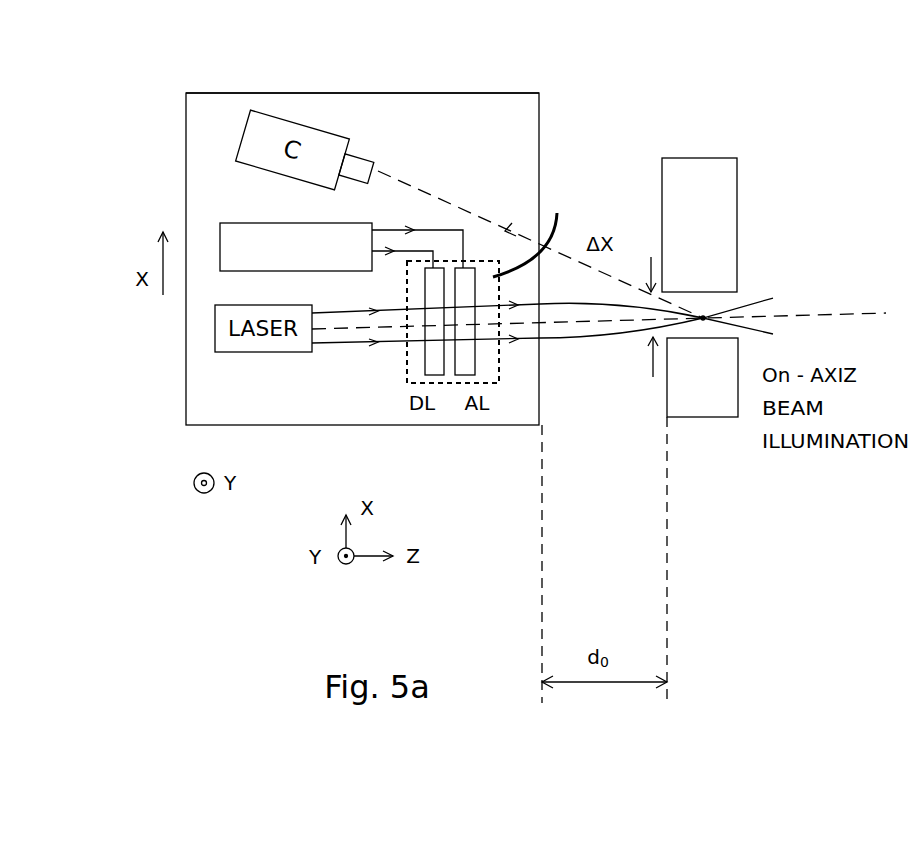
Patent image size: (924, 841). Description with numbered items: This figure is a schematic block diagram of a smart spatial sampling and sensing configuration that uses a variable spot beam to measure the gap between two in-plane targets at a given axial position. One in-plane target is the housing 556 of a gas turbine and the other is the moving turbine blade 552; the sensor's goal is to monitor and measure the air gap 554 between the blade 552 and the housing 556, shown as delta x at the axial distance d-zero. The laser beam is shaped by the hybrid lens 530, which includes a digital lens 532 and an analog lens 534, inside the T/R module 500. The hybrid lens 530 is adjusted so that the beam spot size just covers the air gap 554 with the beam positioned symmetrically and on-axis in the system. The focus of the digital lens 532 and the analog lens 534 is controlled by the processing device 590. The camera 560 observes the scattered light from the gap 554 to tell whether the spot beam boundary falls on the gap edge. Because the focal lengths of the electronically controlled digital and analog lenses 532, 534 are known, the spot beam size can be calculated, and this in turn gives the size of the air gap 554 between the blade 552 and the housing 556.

The T/R module 500 is at (403, 108).
The processing device 590 is at (323, 98).
The camera 560 is at (232, 222).
The hybrid lens 530 is at (557, 213).
The digital lens 532 is at (428, 360).
The analog lens 534 is at (470, 357).
The turbine blade 552 is at (717, 160).
The air gap 554 is at (660, 318).
The housing 556 is at (700, 418).